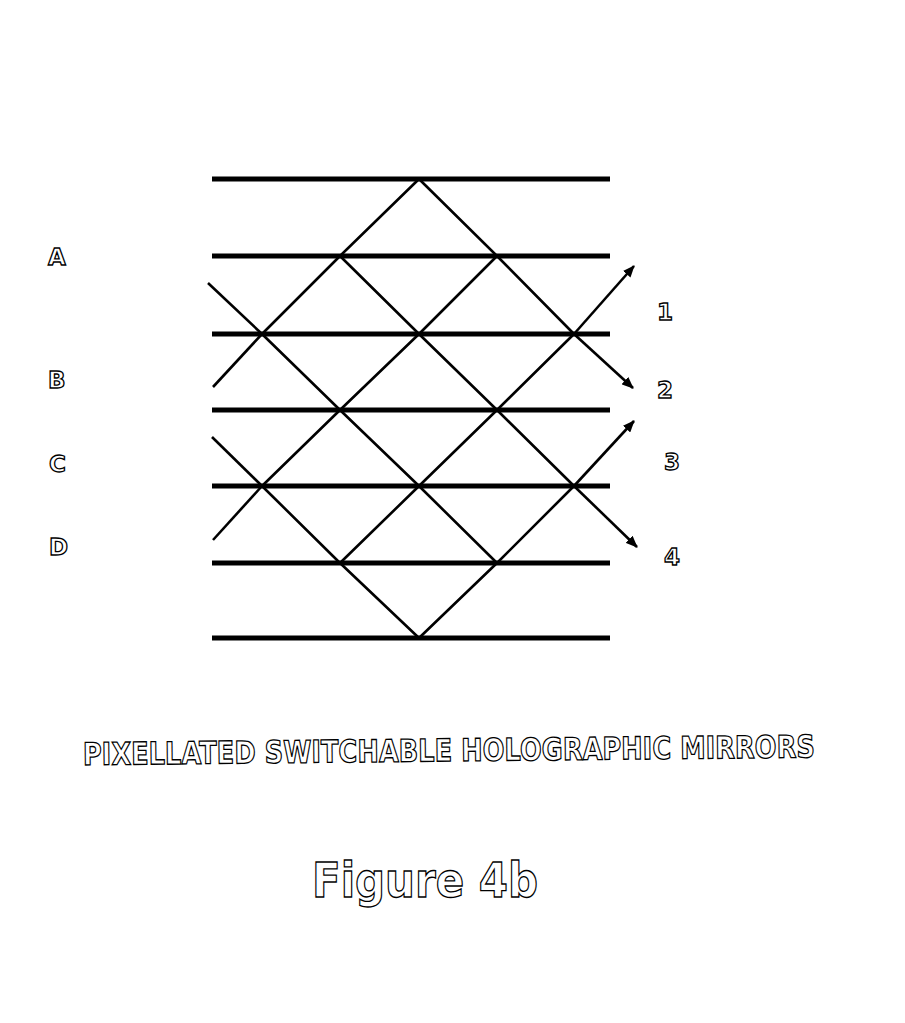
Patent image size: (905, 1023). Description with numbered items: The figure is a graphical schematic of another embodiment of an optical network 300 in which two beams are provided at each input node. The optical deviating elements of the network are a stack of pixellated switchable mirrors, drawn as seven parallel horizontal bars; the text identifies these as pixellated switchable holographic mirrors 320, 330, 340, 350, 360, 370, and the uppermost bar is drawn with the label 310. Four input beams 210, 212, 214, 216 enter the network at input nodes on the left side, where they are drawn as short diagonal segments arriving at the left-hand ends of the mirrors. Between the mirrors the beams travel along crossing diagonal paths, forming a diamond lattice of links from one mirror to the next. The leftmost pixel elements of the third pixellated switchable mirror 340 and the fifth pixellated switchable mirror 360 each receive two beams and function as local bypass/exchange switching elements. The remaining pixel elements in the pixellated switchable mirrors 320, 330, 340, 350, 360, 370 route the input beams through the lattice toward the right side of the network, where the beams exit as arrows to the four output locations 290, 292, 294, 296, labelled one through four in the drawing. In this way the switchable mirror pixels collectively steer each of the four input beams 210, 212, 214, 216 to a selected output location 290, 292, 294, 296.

The optical network 300 is at (297, 136).
The pixellated switchable holographic mirror 310 is at (560, 177).
The pixellated switchable mirror 320 is at (562, 255).
The pixellated switchable mirror 330 is at (215, 337).
The third pixellated switchable mirror 340 is at (215, 416).
The pixellated switchable mirror 350 is at (333, 487).
The fifth pixellated switchable mirror 360 is at (240, 565).
The pixellated switchable mirror 370 is at (278, 641).
The input beam 210 is at (222, 293).
The input beam 212 is at (215, 380).
The input beam 214 is at (233, 461).
The input beam 216 is at (230, 526).
The output location 290 is at (617, 290).
The output location 292 is at (617, 368).
The output location 294 is at (618, 440).
The output location 296 is at (620, 525).